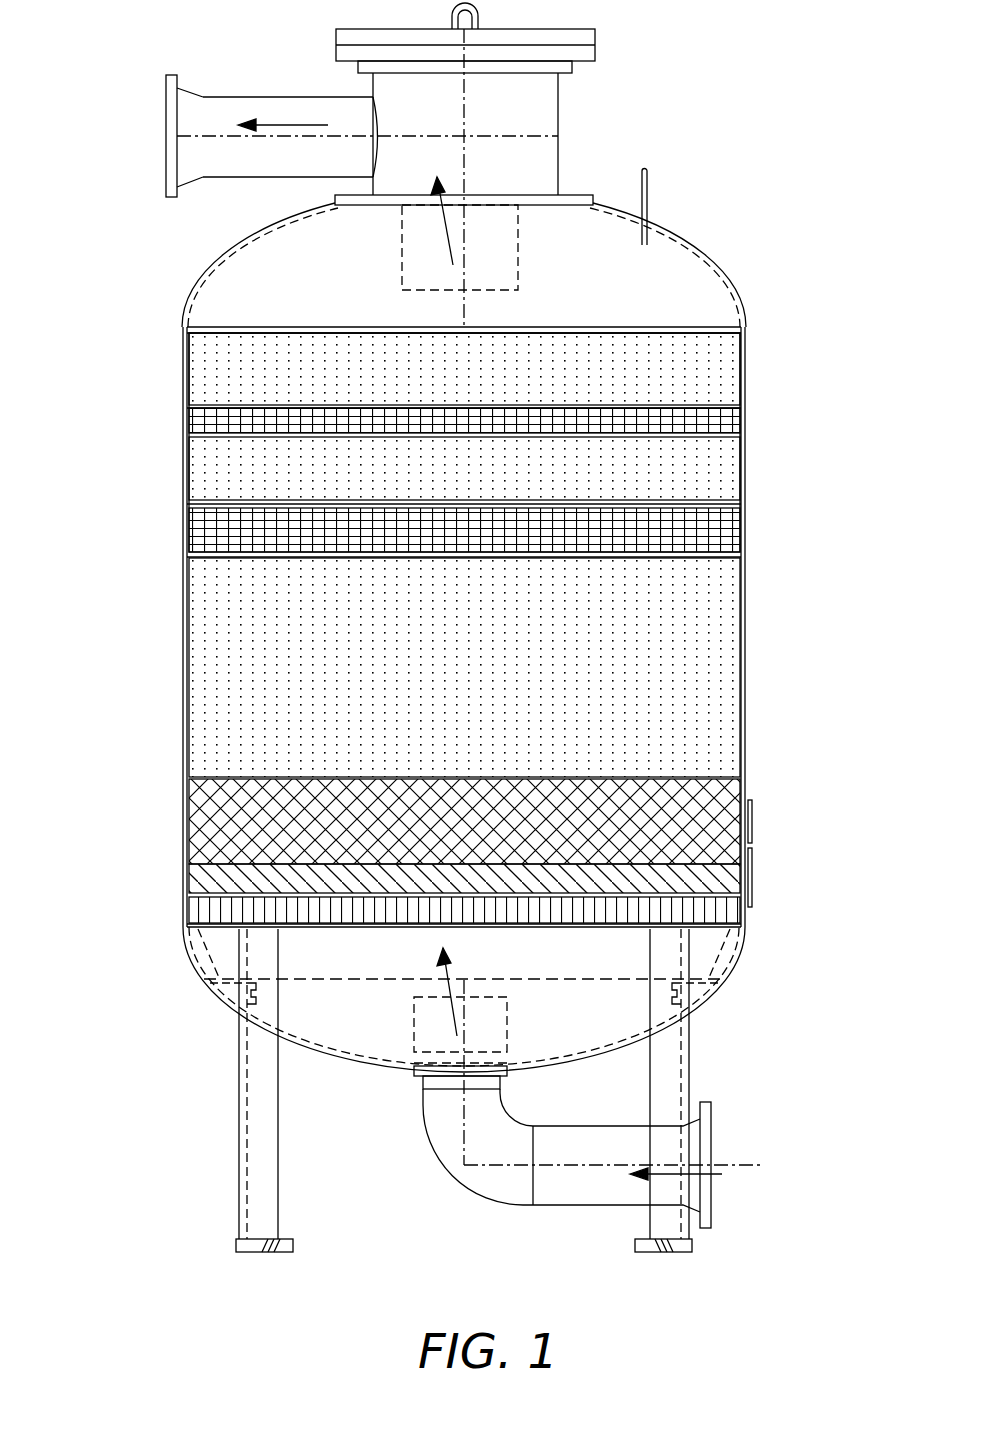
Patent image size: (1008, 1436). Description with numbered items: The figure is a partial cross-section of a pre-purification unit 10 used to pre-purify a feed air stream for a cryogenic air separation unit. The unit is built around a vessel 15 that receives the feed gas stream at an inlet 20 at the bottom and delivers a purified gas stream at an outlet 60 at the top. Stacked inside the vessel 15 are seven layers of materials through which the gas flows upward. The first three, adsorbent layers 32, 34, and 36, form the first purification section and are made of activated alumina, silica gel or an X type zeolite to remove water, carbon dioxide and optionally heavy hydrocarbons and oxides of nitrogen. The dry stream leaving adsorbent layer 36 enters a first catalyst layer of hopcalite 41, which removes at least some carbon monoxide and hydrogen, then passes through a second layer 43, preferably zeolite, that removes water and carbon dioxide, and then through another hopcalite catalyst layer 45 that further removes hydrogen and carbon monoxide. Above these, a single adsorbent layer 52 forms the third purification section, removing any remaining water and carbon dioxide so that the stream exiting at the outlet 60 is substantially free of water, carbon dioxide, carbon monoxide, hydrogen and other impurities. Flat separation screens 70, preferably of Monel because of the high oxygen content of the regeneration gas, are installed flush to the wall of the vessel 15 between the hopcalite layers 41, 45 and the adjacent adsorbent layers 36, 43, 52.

The pre-purification unit 10 is at (778, 58).
The vessel 15 is at (668, 230).
The inlet 20 is at (712, 1143).
The outlet 60 is at (188, 125).
The adsorbent layer 32 is at (727, 878).
The adsorbent layer 34 is at (707, 818).
The adsorbent layer 36 is at (713, 673).
The first catalyst layer of hopcalite 41 is at (707, 533).
The second layer 43 is at (710, 472).
The hopcalite catalyst layer 45 is at (732, 418).
The layer of adsorbent 52 is at (720, 360).
The flat separation screens 70 is at (208, 383).